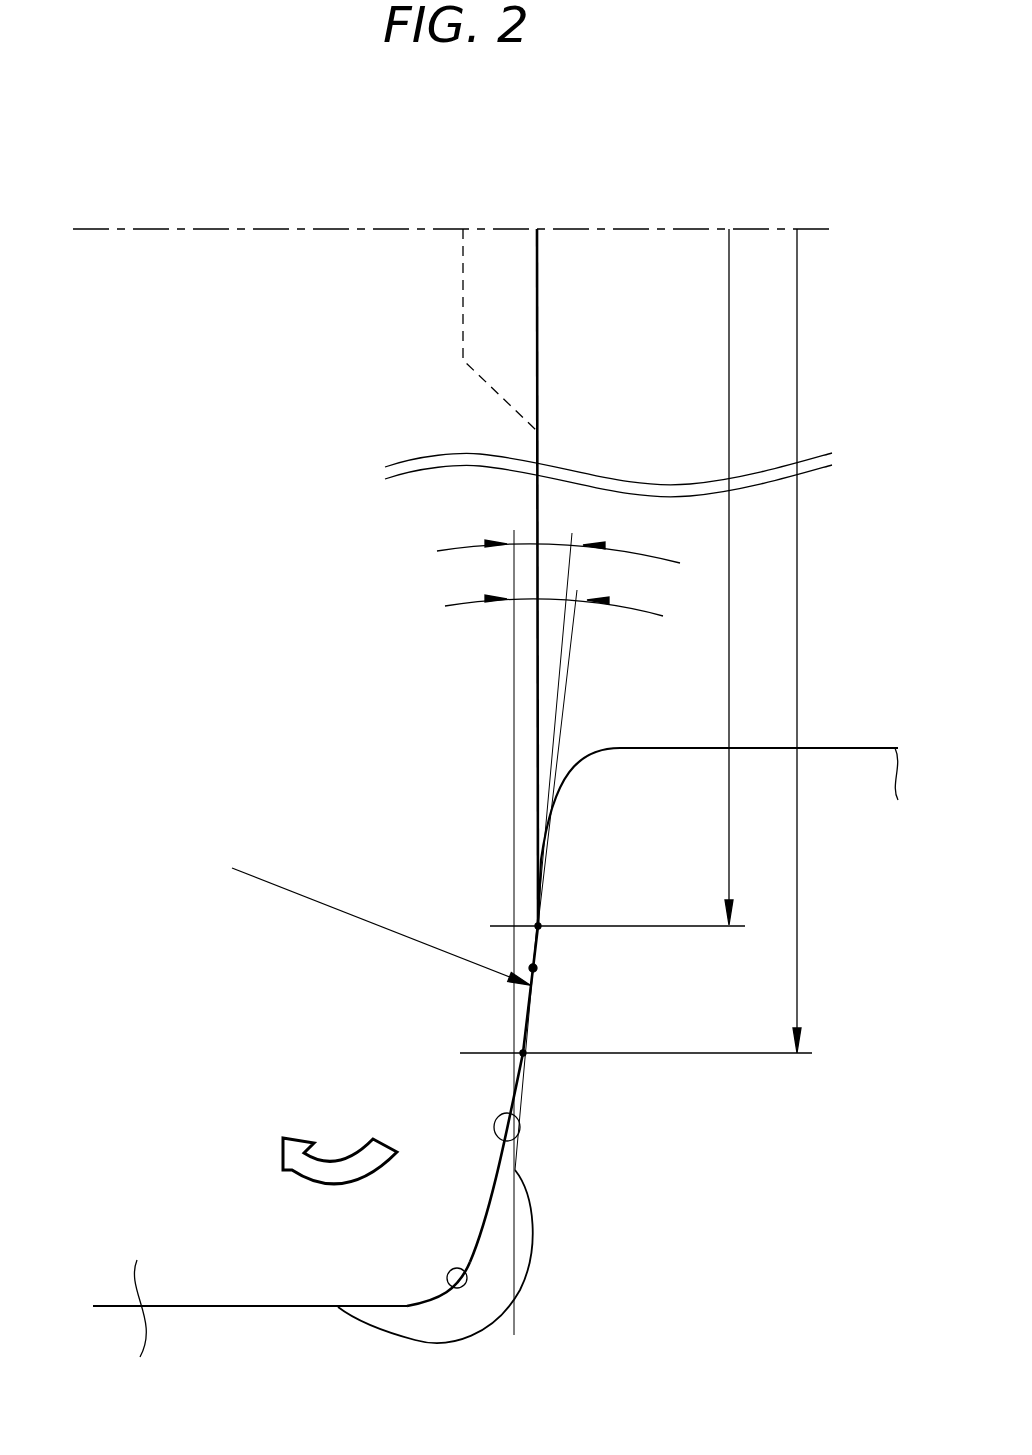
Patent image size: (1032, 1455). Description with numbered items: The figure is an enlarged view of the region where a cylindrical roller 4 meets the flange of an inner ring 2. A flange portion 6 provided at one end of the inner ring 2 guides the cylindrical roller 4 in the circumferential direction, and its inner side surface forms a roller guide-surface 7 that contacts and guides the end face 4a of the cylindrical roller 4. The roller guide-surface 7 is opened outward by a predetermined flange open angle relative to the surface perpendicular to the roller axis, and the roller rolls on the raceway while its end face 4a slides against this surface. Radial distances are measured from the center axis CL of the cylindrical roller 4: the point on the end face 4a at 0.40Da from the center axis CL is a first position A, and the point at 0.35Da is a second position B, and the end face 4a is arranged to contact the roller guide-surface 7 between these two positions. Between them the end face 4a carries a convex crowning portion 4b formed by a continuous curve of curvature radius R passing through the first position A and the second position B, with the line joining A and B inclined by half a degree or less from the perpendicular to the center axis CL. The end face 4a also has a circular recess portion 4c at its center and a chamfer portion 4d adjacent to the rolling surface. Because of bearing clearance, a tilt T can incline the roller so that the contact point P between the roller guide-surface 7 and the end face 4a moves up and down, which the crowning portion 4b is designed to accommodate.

The inner ring 2 is at (250, 1292).
The cylindrical roller 4 is at (275, 1102).
The end face 4a is at (538, 675).
The crowning portion 4b is at (530, 1047).
The circular recess portion 4c is at (507, 313).
The chamfer portion 4d is at (447, 1283).
The flange portion 6 is at (843, 802).
The roller guide-surface 7 is at (497, 1142).
The center axis CL is at (692, 229).
The curvature radius R is at (381, 925).
The tilt T is at (340, 1182).
The bending point P is at (540, 966).
The first position A is at (528, 1060).
The second position B is at (545, 905).
The radial distance of second position 0.35Da is at (629, 577).
The radial distance of first position 0.40Da is at (648, 641).